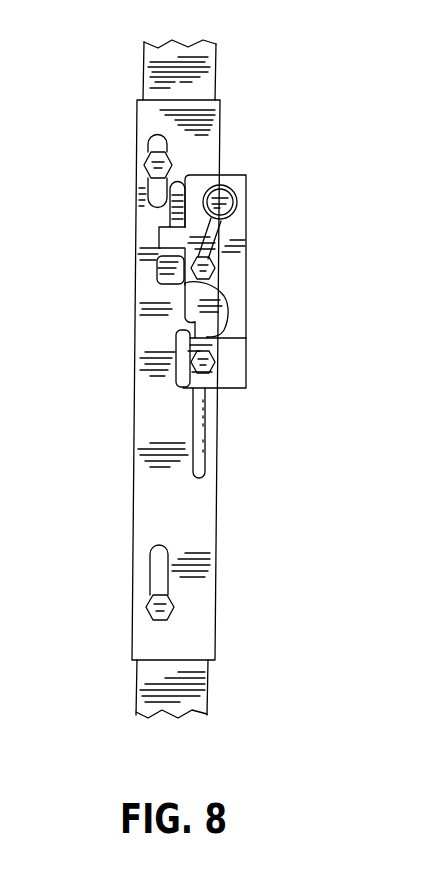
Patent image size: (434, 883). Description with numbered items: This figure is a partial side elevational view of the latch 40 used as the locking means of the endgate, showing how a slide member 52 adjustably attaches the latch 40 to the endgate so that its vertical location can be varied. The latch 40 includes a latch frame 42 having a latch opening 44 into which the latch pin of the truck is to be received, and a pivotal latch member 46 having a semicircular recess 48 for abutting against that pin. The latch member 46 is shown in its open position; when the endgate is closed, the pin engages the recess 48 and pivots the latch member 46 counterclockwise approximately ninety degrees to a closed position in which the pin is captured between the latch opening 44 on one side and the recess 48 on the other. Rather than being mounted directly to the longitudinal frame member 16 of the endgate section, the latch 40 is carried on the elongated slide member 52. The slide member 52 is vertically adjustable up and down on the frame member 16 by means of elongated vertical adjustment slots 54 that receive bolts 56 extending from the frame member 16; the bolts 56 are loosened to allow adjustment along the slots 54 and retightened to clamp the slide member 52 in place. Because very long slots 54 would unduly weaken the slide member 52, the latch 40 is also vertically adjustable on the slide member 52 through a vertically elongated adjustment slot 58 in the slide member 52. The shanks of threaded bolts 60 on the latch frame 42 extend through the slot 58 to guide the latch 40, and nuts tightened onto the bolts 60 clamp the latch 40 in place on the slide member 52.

The longitudinal frame member 16 is at (208, 82).
The latch 40 is at (253, 240).
The latch frame 42 is at (237, 283).
The latch opening 44 is at (190, 340).
The pivotal latch member 46 is at (165, 266).
The semicircular recess 48 is at (183, 283).
The slide member 52 is at (193, 510).
The vertical adjustment slot 54 is at (152, 143).
The bolt 56 is at (147, 172).
The adjustment slot 58 is at (200, 432).
The threaded bolt 60 is at (213, 265).